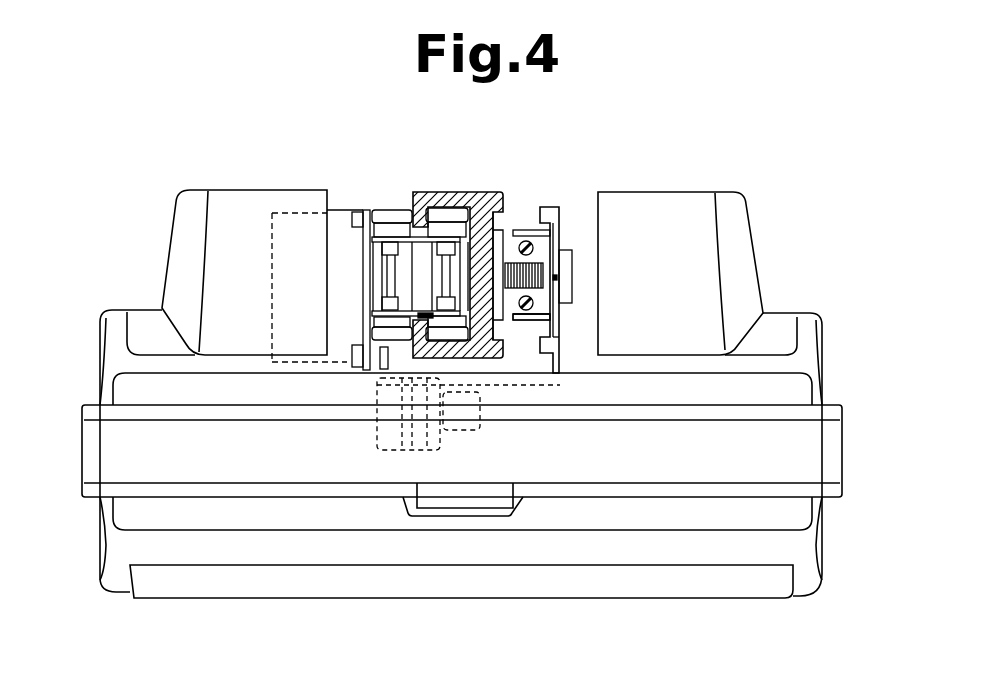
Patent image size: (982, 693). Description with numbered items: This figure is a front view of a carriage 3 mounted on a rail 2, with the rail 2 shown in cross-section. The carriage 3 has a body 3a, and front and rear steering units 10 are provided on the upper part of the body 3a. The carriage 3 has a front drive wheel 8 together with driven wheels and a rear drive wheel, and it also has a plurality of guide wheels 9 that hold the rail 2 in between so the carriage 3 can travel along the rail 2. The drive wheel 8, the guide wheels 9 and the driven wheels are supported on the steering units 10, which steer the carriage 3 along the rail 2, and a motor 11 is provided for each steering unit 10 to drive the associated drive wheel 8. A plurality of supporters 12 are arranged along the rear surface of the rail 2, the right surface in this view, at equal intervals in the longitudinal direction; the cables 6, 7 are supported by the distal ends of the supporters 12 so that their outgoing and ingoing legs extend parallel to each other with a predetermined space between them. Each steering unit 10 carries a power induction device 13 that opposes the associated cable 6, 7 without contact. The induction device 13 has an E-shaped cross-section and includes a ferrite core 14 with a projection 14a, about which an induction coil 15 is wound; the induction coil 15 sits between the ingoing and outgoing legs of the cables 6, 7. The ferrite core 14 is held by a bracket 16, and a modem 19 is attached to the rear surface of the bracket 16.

The rail 2 is at (438, 207).
The carriage 3 is at (383, 596).
The body 3a is at (842, 467).
The cable 6 is at (530, 245).
The cable 7 is at (531, 317).
The front drive wheel 8 is at (410, 227).
The guide wheels 9 is at (387, 210).
The steering unit 10 is at (522, 393).
The motor 11 is at (357, 210).
The supporter 12 is at (498, 212).
The power induction device 13 is at (562, 218).
The ferrite core 14 is at (548, 312).
The projection 14a is at (502, 268).
The induction coil 15 is at (520, 306).
The bracket 16 is at (557, 322).
The modem 19 is at (572, 277).